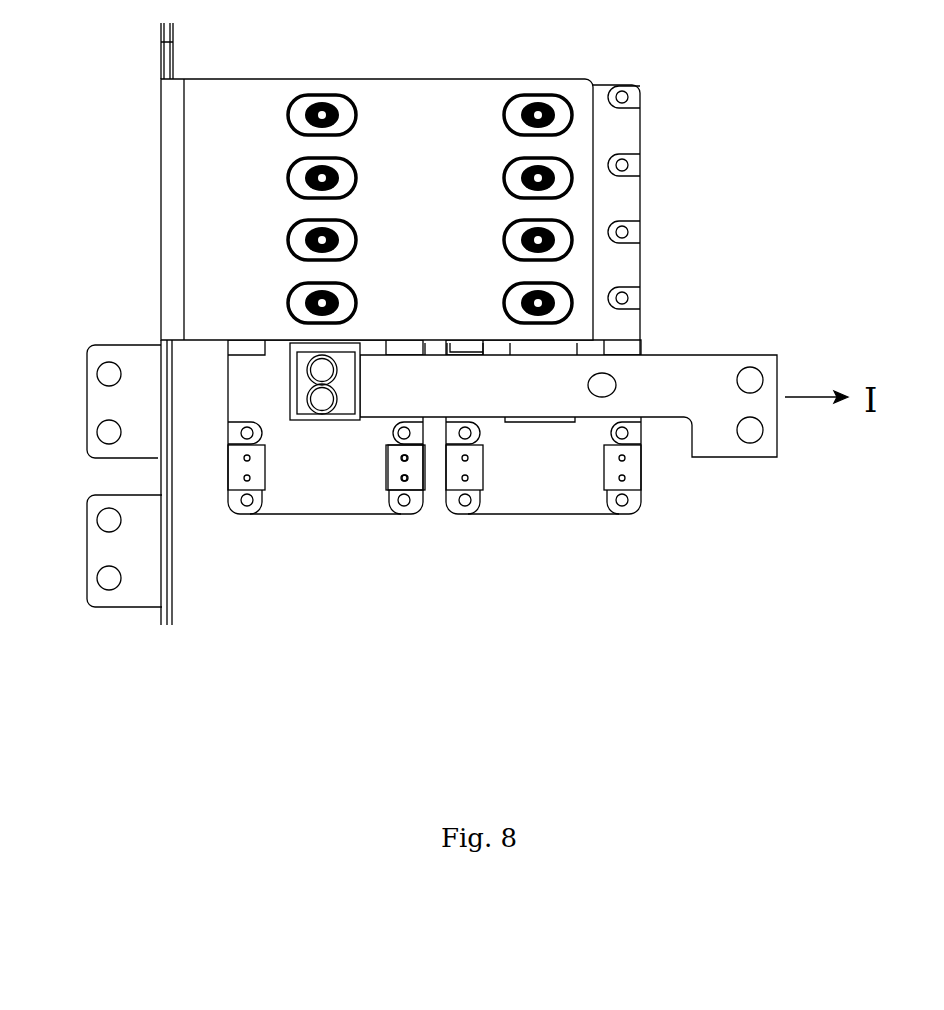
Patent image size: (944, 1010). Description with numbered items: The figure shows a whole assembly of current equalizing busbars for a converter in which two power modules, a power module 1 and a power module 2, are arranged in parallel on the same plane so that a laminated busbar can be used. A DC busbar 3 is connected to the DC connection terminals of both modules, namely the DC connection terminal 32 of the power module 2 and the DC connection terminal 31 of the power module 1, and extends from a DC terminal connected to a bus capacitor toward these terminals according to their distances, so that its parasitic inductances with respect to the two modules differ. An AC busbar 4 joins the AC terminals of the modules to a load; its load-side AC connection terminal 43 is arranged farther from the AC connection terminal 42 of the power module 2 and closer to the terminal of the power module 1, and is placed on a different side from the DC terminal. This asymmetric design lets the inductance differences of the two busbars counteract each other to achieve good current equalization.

The power module 1 is at (530, 497).
The power module 2 is at (396, 488).
The DC busbar 3 is at (417, 93).
The DC connection terminal 31 is at (582, 298).
The DC connection terminal 32 is at (278, 305).
The AC busbar 4 is at (703, 443).
The AC connection terminal 42 is at (324, 401).
The AC connection terminal 43 is at (740, 426).